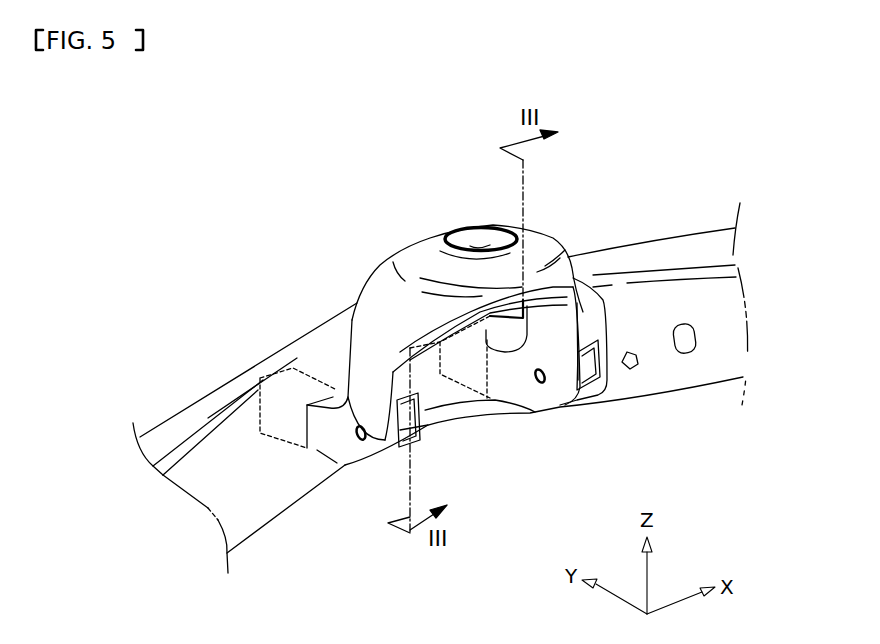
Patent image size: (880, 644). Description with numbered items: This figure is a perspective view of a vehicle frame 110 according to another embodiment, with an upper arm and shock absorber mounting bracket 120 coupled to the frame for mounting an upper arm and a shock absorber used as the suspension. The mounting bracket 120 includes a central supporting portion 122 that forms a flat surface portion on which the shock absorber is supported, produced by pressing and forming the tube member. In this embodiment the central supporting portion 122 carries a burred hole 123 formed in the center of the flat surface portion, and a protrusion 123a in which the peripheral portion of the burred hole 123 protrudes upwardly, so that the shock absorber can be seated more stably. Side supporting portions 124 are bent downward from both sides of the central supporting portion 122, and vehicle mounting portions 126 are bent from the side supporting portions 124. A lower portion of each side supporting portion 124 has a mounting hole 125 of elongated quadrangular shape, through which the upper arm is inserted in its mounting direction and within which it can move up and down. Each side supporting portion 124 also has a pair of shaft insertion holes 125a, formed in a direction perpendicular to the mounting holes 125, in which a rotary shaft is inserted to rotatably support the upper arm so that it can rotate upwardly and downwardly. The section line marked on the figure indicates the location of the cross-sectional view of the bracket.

The vehicle frame 110 is at (306, 302).
The upper arm and shock absorber mounting bracket 120 is at (563, 229).
The central supporting portion 122 is at (413, 253).
The burred hole 123 is at (477, 246).
The protrusion 123a is at (455, 233).
The side supporting portion 124 is at (368, 343).
The mounting hole 125 is at (420, 433).
The shaft insertion hole 125a is at (360, 440).
The vehicle mounting portion 126 is at (328, 440).